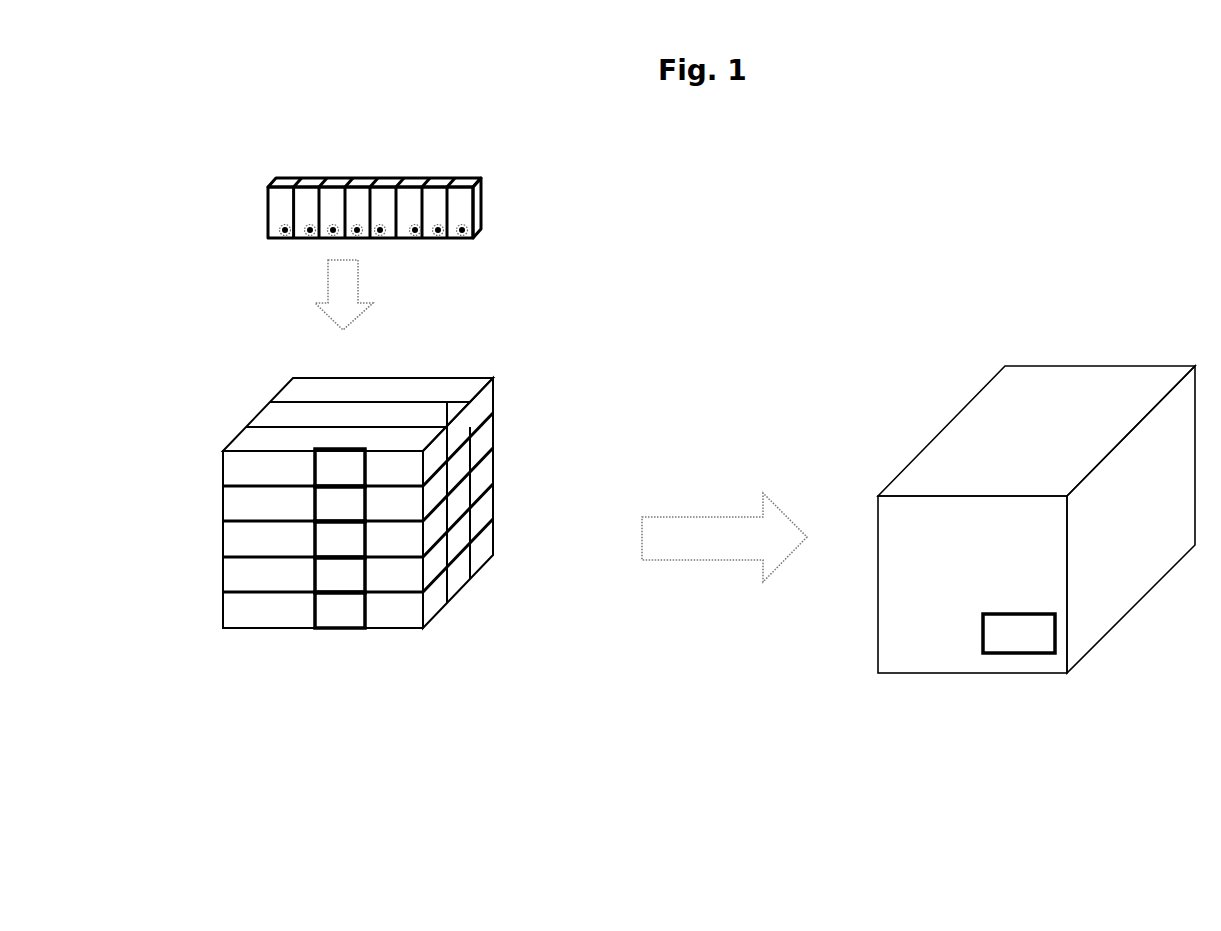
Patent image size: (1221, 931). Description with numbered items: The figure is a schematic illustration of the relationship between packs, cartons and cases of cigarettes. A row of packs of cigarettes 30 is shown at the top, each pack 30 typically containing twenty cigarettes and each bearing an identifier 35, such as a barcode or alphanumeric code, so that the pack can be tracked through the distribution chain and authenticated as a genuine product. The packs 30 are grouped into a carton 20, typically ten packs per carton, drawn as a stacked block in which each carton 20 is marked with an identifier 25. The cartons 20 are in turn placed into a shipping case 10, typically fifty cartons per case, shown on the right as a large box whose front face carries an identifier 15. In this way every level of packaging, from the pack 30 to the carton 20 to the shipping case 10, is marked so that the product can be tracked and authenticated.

The shipping case 10 is at (910, 638).
The identifier 15 is at (1030, 640).
The carton 20 is at (245, 603).
The identifier 25 is at (340, 618).
The pack of cigarettes 30 is at (482, 200).
The identifier 35 is at (462, 235).